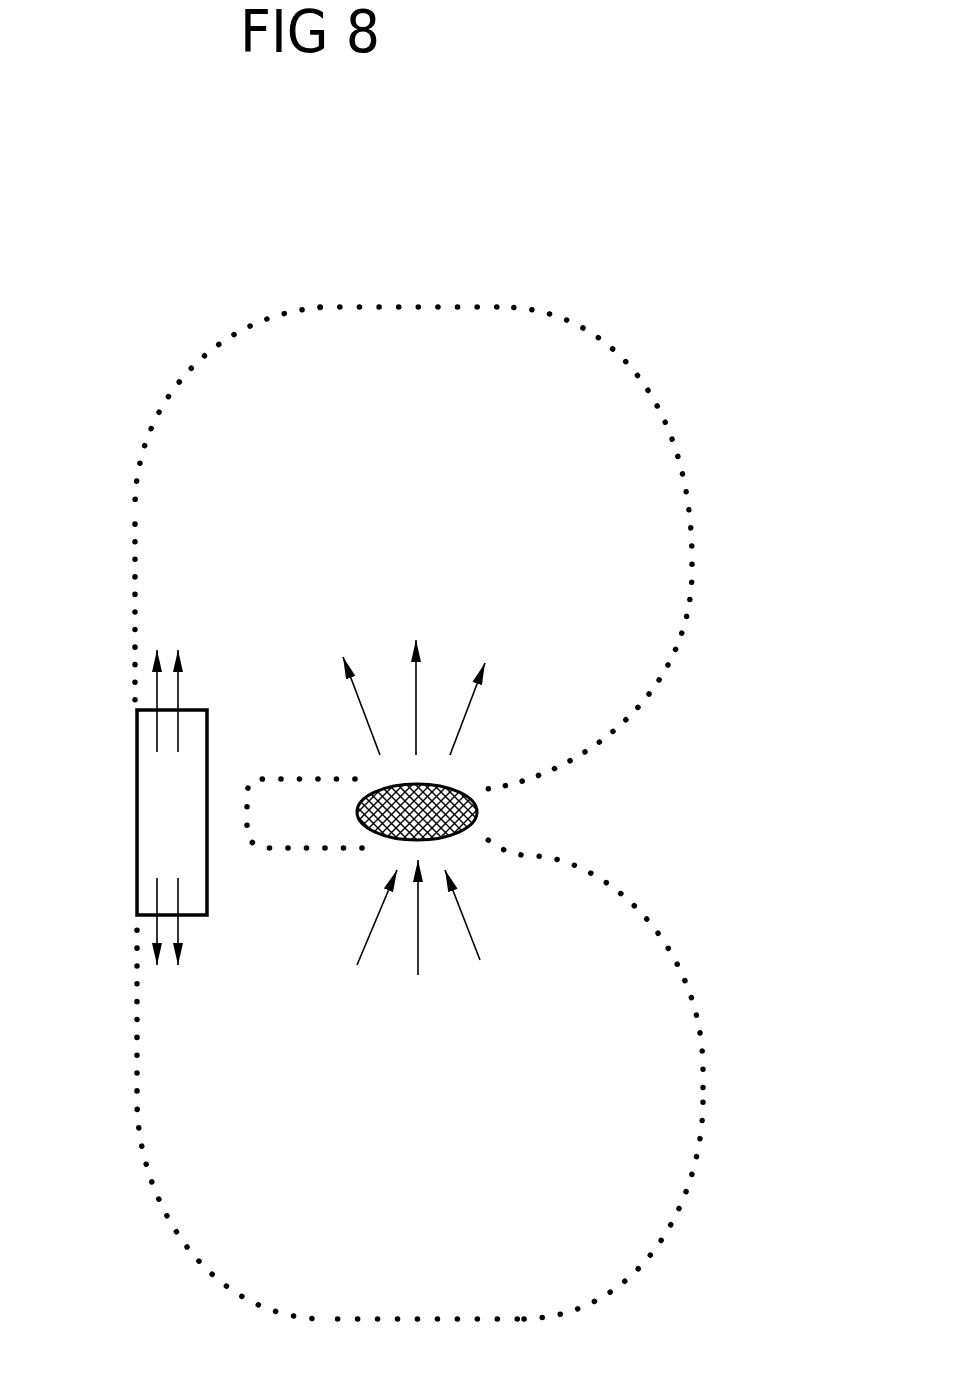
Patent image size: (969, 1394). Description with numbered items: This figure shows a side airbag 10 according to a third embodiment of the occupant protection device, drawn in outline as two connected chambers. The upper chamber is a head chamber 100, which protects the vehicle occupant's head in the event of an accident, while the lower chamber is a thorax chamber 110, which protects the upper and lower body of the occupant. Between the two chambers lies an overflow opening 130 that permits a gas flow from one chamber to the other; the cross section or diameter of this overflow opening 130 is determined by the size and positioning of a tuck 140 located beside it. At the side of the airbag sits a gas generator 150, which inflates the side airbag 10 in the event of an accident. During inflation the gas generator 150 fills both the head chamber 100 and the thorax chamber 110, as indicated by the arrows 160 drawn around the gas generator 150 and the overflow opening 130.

The side airbag 10 is at (490, 813).
The head chamber 100 is at (655, 598).
The thorax chamber 110 is at (653, 1157).
The overflow opening 130 is at (478, 810).
The tuck 140 is at (296, 850).
The gas generator 150 is at (137, 798).
The arrows 160 is at (178, 695).